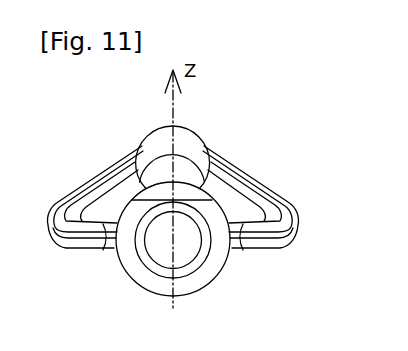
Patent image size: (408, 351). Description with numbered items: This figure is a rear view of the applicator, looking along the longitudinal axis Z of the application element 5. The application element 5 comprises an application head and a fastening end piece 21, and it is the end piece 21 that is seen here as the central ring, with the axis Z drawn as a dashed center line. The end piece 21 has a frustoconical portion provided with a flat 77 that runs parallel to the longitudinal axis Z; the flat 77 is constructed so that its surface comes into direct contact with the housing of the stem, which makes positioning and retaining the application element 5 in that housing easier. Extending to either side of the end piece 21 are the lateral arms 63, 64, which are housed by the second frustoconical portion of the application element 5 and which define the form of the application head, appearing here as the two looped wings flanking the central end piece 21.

The application element 5 is at (299, 311).
The fastening end piece 21 is at (226, 282).
The lateral arm 63 is at (104, 170).
The lateral arm 64 is at (264, 183).
The flat 77 is at (192, 193).